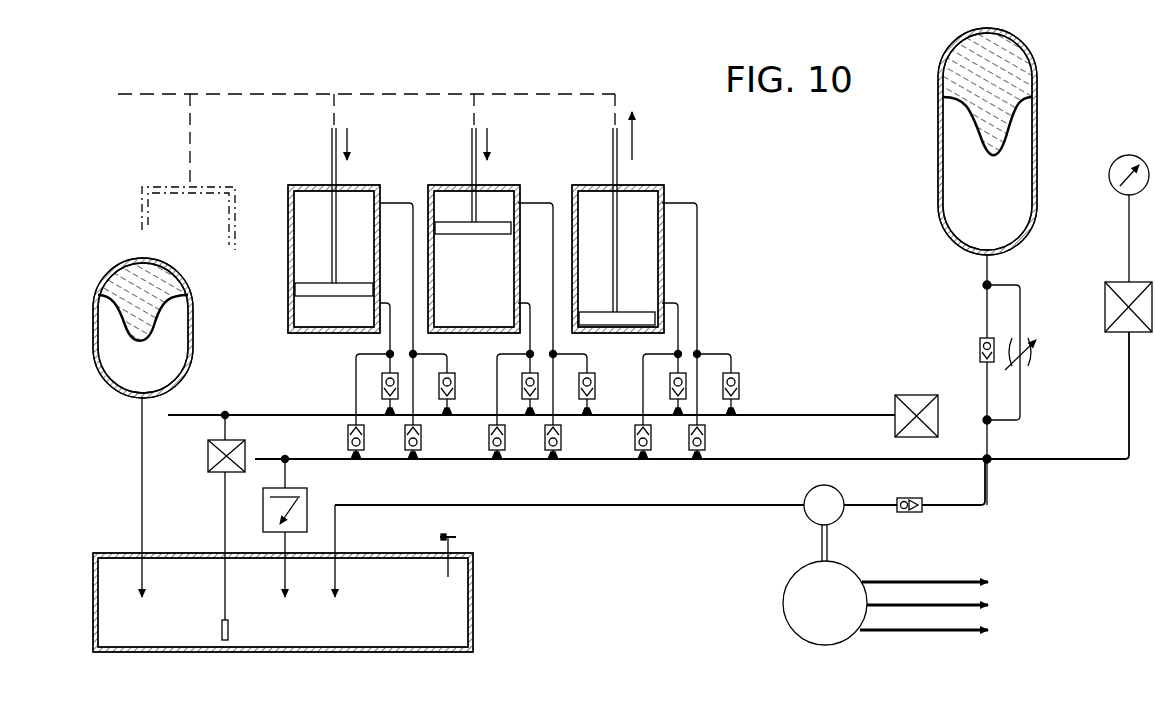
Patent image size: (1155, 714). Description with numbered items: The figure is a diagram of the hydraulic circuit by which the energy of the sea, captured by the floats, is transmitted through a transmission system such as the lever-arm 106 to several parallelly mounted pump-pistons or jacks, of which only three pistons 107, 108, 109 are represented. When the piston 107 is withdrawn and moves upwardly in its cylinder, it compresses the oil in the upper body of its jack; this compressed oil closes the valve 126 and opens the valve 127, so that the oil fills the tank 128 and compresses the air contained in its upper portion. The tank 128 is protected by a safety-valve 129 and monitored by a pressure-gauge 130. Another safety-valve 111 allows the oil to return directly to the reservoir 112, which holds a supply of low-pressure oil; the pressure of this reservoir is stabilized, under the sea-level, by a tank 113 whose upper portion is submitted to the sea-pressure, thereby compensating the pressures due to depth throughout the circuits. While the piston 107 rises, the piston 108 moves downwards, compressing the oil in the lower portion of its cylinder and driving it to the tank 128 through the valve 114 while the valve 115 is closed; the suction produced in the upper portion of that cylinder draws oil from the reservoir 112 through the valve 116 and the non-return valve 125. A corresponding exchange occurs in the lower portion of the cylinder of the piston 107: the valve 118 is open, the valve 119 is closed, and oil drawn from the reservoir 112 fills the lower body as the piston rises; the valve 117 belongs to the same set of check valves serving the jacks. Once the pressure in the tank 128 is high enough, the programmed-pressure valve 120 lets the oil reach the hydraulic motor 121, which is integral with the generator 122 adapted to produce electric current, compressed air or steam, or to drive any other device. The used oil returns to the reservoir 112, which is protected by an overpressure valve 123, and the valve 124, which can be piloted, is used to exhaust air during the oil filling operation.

The lever-arm 106 is at (290, 94).
The piston 107 is at (640, 320).
The piston 108 is at (498, 225).
The piston 109 is at (315, 290).
The safety-valve 111 is at (307, 490).
The reservoir 112 is at (468, 603).
The tank 113 is at (160, 375).
The valve 114 is at (489, 440).
The valve 115 is at (522, 385).
The valve 116 is at (587, 385).
The valve 117 is at (561, 437).
The valve 118 is at (670, 383).
The valve 119 is at (651, 437).
The programmed-pressure valve 120 is at (1030, 366).
The hydraulic motor 121 is at (810, 518).
The generator 122 is at (785, 610).
The overpressure valve 123 is at (458, 536).
The valve 124 is at (912, 403).
The non-return valve 125 is at (210, 460).
The valve 126 is at (739, 385).
The valve 127 is at (705, 437).
The tank 128 is at (940, 208).
The safety-valve 129 is at (1110, 298).
The pressure-gauge 130 is at (1125, 156).